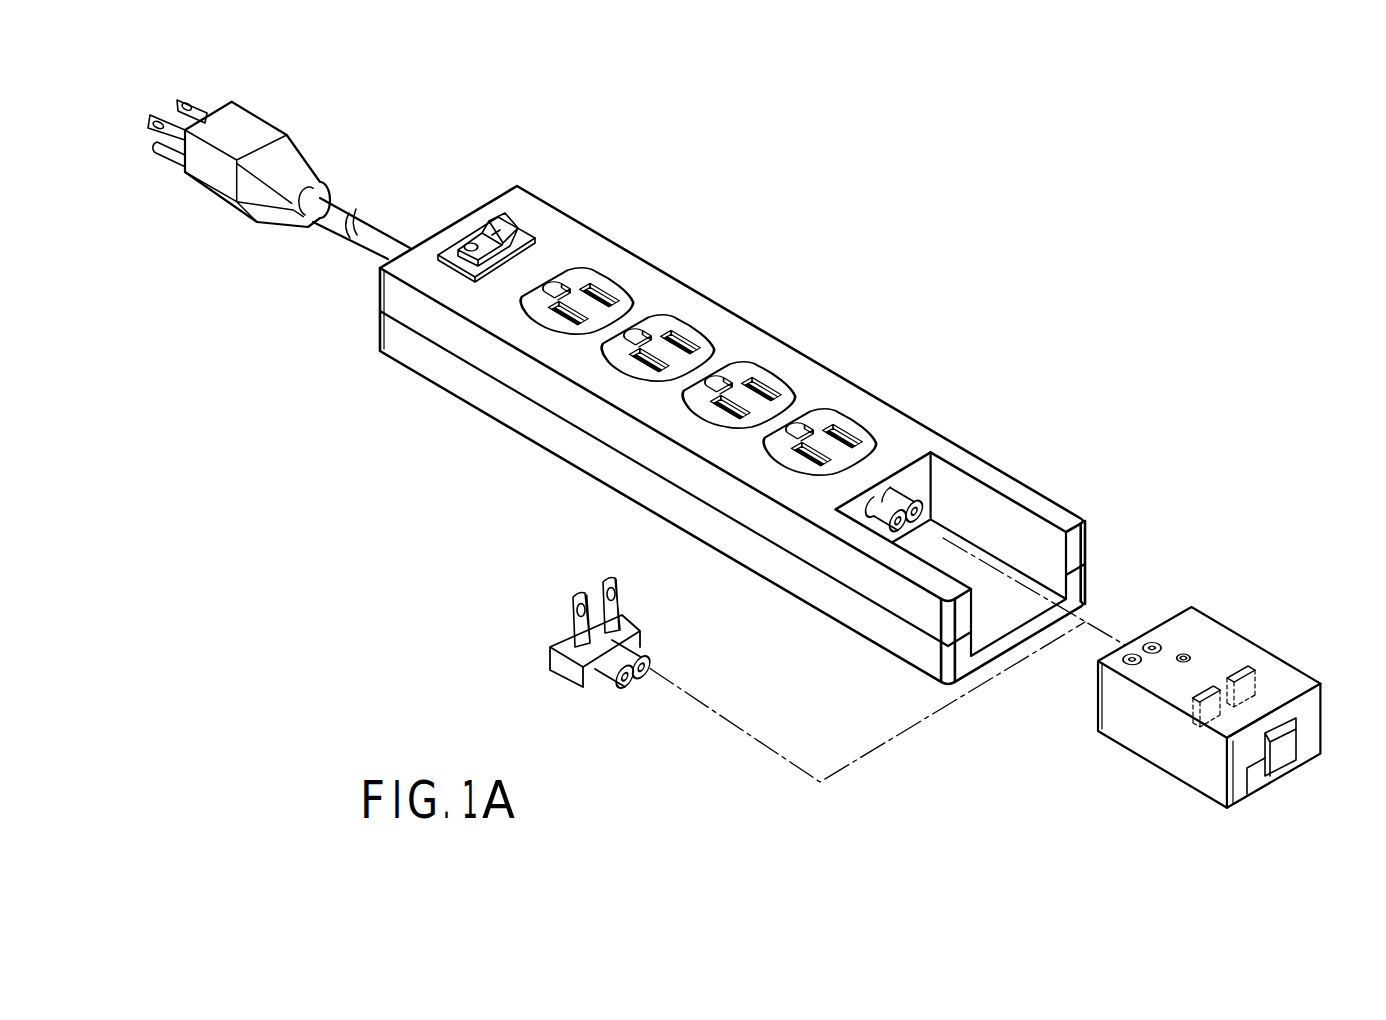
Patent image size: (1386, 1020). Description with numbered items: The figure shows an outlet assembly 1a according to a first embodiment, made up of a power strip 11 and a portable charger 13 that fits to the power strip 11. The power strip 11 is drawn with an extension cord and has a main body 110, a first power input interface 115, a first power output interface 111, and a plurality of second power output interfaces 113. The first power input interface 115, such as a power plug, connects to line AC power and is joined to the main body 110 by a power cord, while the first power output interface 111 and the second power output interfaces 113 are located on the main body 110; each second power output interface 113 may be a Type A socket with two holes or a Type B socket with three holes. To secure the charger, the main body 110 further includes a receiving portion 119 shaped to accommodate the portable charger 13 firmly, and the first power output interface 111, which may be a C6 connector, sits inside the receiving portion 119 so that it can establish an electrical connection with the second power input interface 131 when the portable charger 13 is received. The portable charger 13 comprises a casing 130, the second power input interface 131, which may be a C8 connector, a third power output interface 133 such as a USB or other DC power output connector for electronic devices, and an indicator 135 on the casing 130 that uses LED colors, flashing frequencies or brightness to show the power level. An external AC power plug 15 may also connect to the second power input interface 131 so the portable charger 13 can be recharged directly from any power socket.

The outlet assembly 1a is at (1178, 242).
The power strip 11 is at (989, 471).
The main body 110 is at (805, 360).
The first power output interface 111 is at (904, 497).
The second power output interfaces 113 is at (667, 327).
The first power input interface 115 is at (287, 156).
The receiving portion 119 is at (1030, 535).
The portable charger 13 is at (1220, 642).
The casing 130 is at (1321, 711).
The second power input interface 131 is at (1143, 637).
The third power output interface 133 is at (1247, 660).
The indicator 135 is at (1183, 652).
The external AC power plug 15 is at (555, 644).